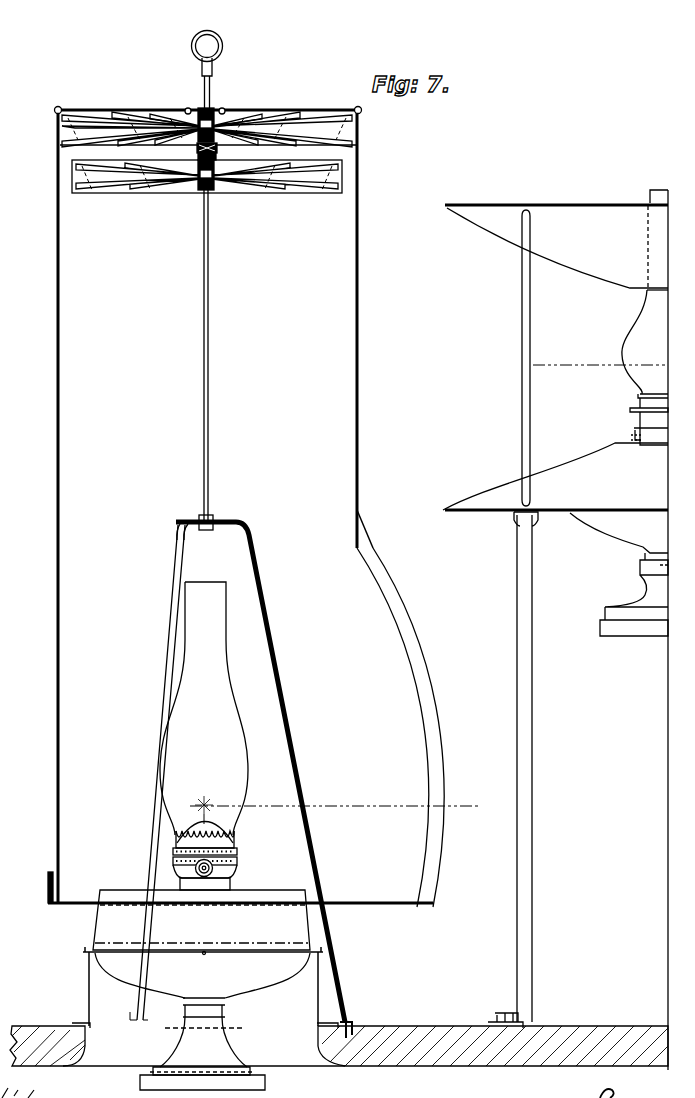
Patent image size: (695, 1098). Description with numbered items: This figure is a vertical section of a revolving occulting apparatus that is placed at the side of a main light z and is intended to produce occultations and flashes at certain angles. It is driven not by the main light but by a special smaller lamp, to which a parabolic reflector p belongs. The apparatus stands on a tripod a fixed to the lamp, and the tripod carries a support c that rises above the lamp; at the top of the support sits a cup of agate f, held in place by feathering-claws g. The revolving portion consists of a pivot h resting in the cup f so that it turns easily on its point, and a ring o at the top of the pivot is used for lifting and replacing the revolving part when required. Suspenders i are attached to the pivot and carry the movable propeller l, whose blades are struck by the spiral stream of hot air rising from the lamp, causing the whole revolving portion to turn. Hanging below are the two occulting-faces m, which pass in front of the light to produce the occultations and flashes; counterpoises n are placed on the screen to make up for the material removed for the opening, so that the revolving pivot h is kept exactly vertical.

The ring o is at (214, 46).
The pivot h is at (211, 91).
The suspenders i is at (208, 143).
The movable propeller l is at (112, 124).
The cup of agate f is at (222, 143).
The feathering-claws g is at (216, 156).
The support c is at (209, 290).
The occulting-screen m is at (56, 292).
The counterpoises n is at (48, 887).
The parabolic reflector p is at (335, 727).
The main light z is at (600, 342).
The tripod a is at (212, 806).